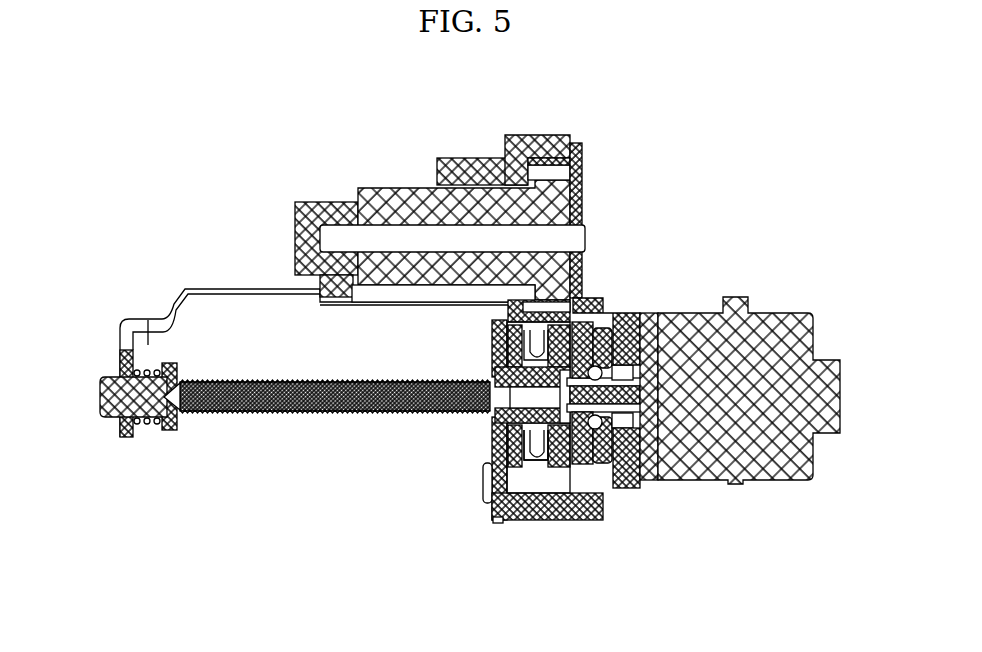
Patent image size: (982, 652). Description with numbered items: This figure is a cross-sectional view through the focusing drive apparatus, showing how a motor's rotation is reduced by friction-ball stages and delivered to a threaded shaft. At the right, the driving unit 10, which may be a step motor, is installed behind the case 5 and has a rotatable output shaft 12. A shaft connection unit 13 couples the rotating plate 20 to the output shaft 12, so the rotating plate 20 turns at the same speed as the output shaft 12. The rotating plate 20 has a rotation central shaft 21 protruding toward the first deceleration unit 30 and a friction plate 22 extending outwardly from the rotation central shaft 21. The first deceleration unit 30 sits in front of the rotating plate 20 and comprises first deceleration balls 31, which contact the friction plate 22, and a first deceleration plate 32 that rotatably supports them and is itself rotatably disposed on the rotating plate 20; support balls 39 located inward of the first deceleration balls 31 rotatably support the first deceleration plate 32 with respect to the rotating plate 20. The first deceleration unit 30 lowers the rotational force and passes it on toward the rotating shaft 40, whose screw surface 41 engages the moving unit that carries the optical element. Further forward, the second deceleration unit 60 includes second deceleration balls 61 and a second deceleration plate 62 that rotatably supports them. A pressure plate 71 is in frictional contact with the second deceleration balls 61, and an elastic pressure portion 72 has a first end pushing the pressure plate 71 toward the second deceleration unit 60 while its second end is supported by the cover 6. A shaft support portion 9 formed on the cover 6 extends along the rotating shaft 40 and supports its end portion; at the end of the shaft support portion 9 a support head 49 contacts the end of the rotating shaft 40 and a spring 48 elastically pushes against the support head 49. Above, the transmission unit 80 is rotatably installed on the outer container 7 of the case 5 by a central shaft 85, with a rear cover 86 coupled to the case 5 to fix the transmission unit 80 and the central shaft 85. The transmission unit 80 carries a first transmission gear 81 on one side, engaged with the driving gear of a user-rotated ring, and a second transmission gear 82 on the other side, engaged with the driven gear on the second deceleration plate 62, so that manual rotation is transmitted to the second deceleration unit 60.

The case 5 is at (478, 158).
The cover 6 is at (492, 324).
The outer container 7 is at (560, 142).
The shaft support portion 9 is at (160, 320).
The driving unit 10 is at (811, 313).
The output shaft 12 is at (668, 440).
The shaft connection unit 13 is at (645, 362).
The rotating plate 20 is at (607, 335).
The rotation central shaft 21 is at (578, 372).
The friction plate 22 is at (590, 455).
The first deceleration unit 30 is at (597, 568).
The first deceleration balls 31 is at (578, 482).
The first deceleration plate 32 is at (565, 485).
The support balls 39 is at (617, 450).
The rotating shaft 40 is at (207, 418).
The screw surface 41 is at (233, 380).
The spring 48 is at (146, 432).
The support head 49 is at (103, 400).
The second deceleration unit 60 is at (432, 565).
The second deceleration balls 61 is at (492, 517).
The second deceleration plate 62 is at (540, 472).
The pressure plate 71 is at (505, 425).
The elastic pressure portion 72 is at (500, 352).
The transmission unit 80 is at (428, 184).
The first transmission gear 81 is at (362, 187).
The second transmission gear 82 is at (548, 165).
The central shaft 85 is at (578, 238).
The rear cover 86 is at (580, 150).